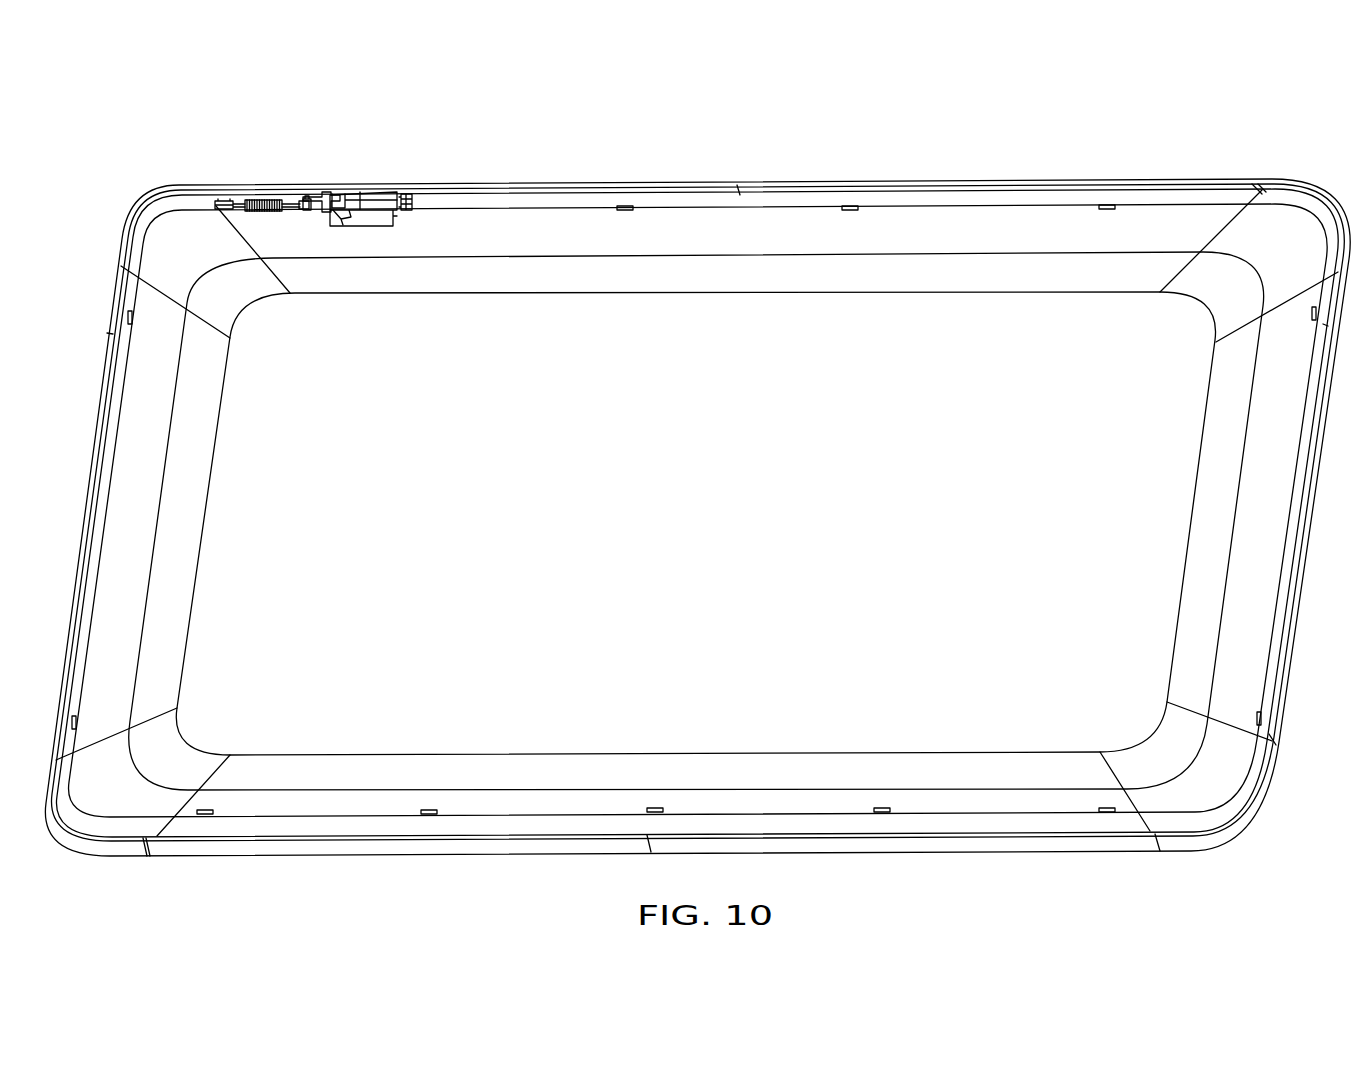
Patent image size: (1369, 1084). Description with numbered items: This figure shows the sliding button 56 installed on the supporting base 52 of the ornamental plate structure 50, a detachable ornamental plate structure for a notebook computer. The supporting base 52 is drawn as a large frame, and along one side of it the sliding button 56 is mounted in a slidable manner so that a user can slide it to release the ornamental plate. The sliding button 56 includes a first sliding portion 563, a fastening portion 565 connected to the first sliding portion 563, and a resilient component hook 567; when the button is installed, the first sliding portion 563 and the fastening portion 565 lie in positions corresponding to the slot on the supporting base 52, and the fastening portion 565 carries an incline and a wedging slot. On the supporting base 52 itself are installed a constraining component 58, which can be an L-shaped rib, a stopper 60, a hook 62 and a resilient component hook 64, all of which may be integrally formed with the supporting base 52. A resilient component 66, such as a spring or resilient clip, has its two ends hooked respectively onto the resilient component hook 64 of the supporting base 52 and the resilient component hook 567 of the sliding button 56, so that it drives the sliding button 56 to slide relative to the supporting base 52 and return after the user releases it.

The ornamental plate structure 50 is at (1220, 160).
The supporting base 52 is at (975, 190).
The sliding button 56 is at (505, 357).
The first sliding portion 563 is at (341, 221).
The fastening portion 565 is at (373, 223).
The resilient component hook 567 is at (307, 211).
The constraining component 58 is at (402, 192).
The stopper 60 is at (329, 191).
The hook 62 is at (332, 191).
The resilient component hook 64 is at (229, 200).
The resilient component 66 is at (261, 198).